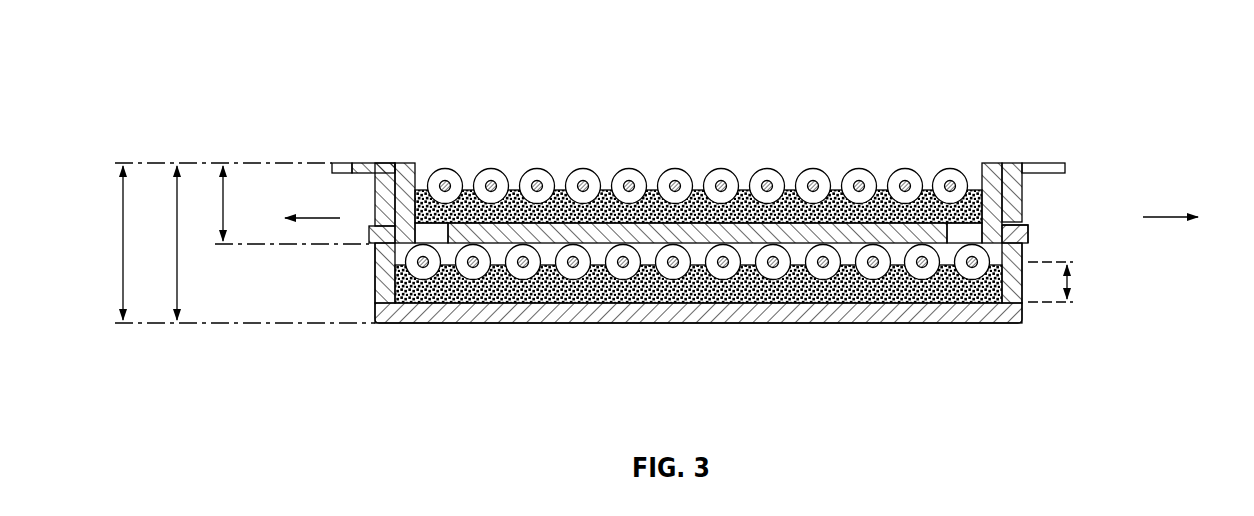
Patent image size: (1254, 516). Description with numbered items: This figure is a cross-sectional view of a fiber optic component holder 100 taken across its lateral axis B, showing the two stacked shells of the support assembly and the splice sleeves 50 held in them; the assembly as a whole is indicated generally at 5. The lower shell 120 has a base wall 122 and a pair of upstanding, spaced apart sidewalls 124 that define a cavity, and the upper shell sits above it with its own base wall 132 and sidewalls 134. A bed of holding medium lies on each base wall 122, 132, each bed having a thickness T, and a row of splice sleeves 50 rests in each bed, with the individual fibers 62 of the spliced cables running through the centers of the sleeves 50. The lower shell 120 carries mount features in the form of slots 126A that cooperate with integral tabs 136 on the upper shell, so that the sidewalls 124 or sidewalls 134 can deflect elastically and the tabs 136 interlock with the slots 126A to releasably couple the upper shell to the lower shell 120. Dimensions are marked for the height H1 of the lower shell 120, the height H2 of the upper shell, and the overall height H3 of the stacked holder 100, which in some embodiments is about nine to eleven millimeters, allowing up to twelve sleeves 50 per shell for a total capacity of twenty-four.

The assembly 5 is at (183, 68).
The fiber optic component holder 100 is at (722, 156).
The lower shell 120 is at (707, 271).
The base wall 122 is at (498, 310).
The sidewalls 124 is at (385, 283).
The slots 126A is at (1020, 222).
The base wall 132 is at (468, 228).
The sidewalls 134 is at (405, 163).
The tabs 136 is at (1024, 232).
The splice sleeve 50 is at (538, 168).
The individual fibers 62 is at (813, 181).
The height of the lower shell H1 is at (177, 277).
The height of the upper shell H2 is at (223, 200).
The height dimension H3 is at (123, 243).
The thickness of the holding medium bed T is at (1068, 280).
The lateral axis B is at (741, 217).